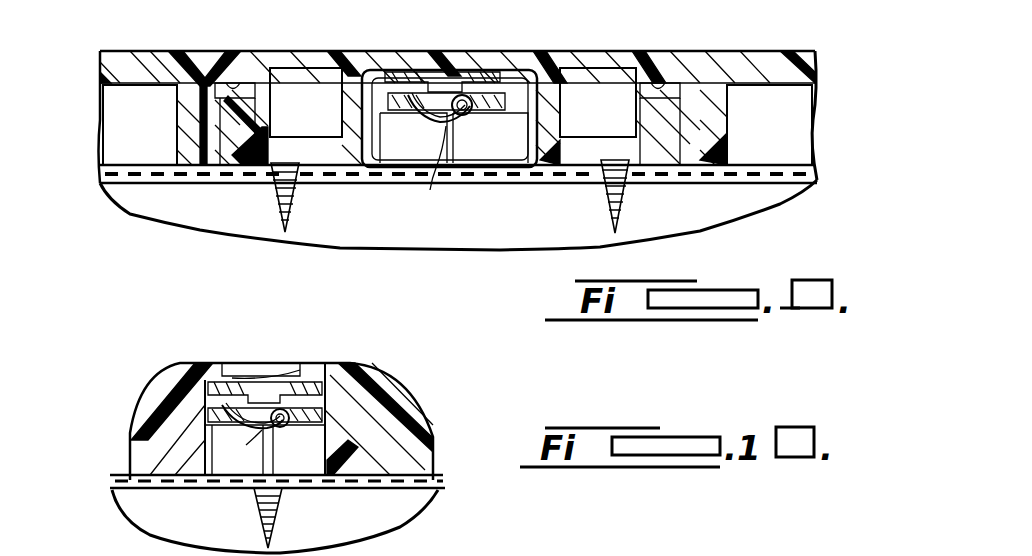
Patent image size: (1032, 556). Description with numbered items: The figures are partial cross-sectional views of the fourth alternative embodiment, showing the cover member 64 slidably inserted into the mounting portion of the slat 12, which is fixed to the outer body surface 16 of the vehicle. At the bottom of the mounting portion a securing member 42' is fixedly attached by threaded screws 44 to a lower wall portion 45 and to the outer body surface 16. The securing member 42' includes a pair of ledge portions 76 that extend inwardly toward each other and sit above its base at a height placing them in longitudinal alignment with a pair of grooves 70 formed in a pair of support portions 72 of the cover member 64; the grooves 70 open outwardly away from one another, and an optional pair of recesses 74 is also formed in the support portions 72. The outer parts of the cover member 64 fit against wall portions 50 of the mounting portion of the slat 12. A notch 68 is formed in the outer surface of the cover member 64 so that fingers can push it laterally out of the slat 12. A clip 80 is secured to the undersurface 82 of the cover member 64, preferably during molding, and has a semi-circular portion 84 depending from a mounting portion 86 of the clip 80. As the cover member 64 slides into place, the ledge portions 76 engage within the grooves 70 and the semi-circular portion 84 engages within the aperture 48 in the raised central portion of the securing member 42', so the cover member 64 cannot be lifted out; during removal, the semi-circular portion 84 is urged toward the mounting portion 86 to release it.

In FIG. 9, the slat 12 is at (110, 62).
In FIG. 10, the slat 12 is at (397, 388).
In FIG. 9, the outer body surface 16 is at (108, 186).
In FIG. 10, the outer body surface 16 is at (425, 505).
In FIG. 9, the securing member 42' is at (530, 45).
In FIG. 10, the securing member 42' is at (421, 439).
In FIG. 9, the threaded screws 44 is at (275, 196).
In FIG. 10, the threaded screws 44 is at (278, 513).
In FIG. 9, the lower wall portion 45 is at (808, 160).
In FIG. 10, the lower wall portion 45 is at (150, 476).
In FIG. 9, the aperture 48 is at (466, 112).
In FIG. 10, the aperture 48 is at (281, 428).
In FIG. 9, the wall portions 50 is at (205, 51).
In FIG. 9, the cover member 64 is at (315, 43).
In FIG. 10, the cover member 64 is at (159, 348).
In FIG. 10, the notch 68 is at (228, 365).
In FIG. 9, the grooves 70 is at (250, 86).
In FIG. 9, the support portions 72 is at (228, 118).
In FIG. 9, the recesses 74 is at (320, 111).
In FIG. 9, the ledge portions 76 is at (232, 81).
In FIG. 9, the clip 80 is at (435, 132).
In FIG. 10, the clip 80 is at (262, 448).
In FIG. 9, the undersurface 82 is at (378, 72).
In FIG. 10, the undersurface 82 is at (205, 395).
In FIG. 9, the semi-circular portion 84 is at (429, 172).
In FIG. 10, the semi-circular portion 84 is at (238, 450).
In FIG. 9, the mounting portion 86 is at (478, 72).
In FIG. 10, the mounting portion 86 is at (288, 398).